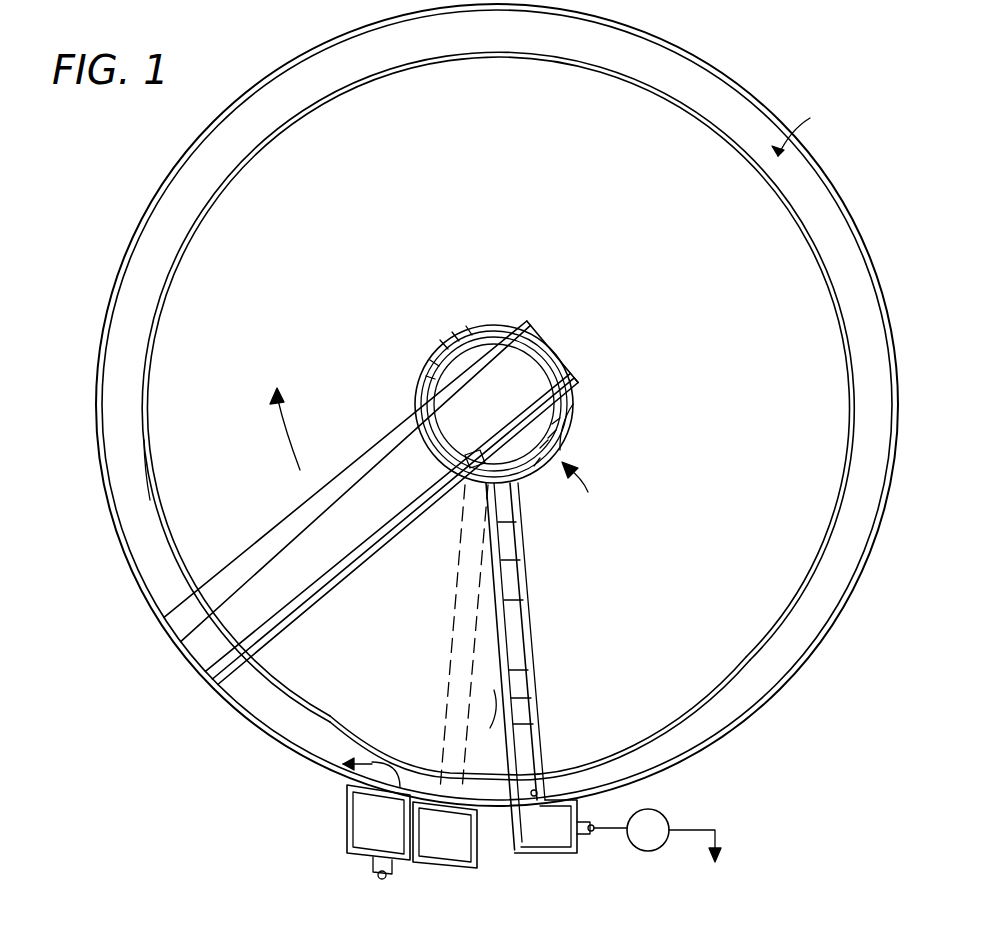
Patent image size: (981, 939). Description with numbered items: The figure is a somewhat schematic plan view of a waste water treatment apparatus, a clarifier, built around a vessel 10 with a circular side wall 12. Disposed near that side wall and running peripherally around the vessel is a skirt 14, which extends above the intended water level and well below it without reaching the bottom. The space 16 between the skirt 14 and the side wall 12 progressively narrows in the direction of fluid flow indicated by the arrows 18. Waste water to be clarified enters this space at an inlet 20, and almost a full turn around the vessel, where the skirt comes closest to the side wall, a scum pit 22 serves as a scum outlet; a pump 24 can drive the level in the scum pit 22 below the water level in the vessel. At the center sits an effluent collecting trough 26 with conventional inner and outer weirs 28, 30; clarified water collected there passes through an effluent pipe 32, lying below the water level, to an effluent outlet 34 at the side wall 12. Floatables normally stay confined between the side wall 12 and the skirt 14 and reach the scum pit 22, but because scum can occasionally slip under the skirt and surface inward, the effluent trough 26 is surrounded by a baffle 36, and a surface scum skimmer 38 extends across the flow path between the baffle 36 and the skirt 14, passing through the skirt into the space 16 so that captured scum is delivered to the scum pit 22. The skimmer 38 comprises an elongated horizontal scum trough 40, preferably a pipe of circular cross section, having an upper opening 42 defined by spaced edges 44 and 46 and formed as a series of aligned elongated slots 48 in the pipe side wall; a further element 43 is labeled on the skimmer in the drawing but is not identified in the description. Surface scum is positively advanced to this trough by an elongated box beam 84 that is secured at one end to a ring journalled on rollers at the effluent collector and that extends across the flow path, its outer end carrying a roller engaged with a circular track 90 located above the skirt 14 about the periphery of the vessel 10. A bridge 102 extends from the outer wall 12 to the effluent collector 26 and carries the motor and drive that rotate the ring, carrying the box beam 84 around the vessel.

The vessel 10 is at (812, 118).
The circular side wall 12 is at (820, 178).
The skirt 14 is at (270, 670).
The space 16 is at (548, 40).
The arrows 18 is at (287, 446).
The inlet 20 is at (377, 876).
The scum pit 22 is at (545, 860).
The pump 24 is at (700, 852).
The effluent collecting trough 26 is at (590, 481).
The inner weir 28 is at (470, 385).
The outer weir 30 is at (578, 408).
The effluent pipe 32 is at (462, 618).
The effluent outlet 34 is at (456, 866).
The baffle 36 is at (582, 440).
The surface scum skimmer 38 is at (530, 644).
The scum trough 40 is at (538, 700).
The upper opening 42 is at (530, 604).
The tube section 43 is at (536, 730).
The edge 44 is at (527, 562).
The edge 46 is at (534, 672).
The elongated slots 48 is at (519, 522).
The box beam 84 is at (488, 717).
The circular track 90 is at (160, 470).
The bridge 102 is at (362, 557).